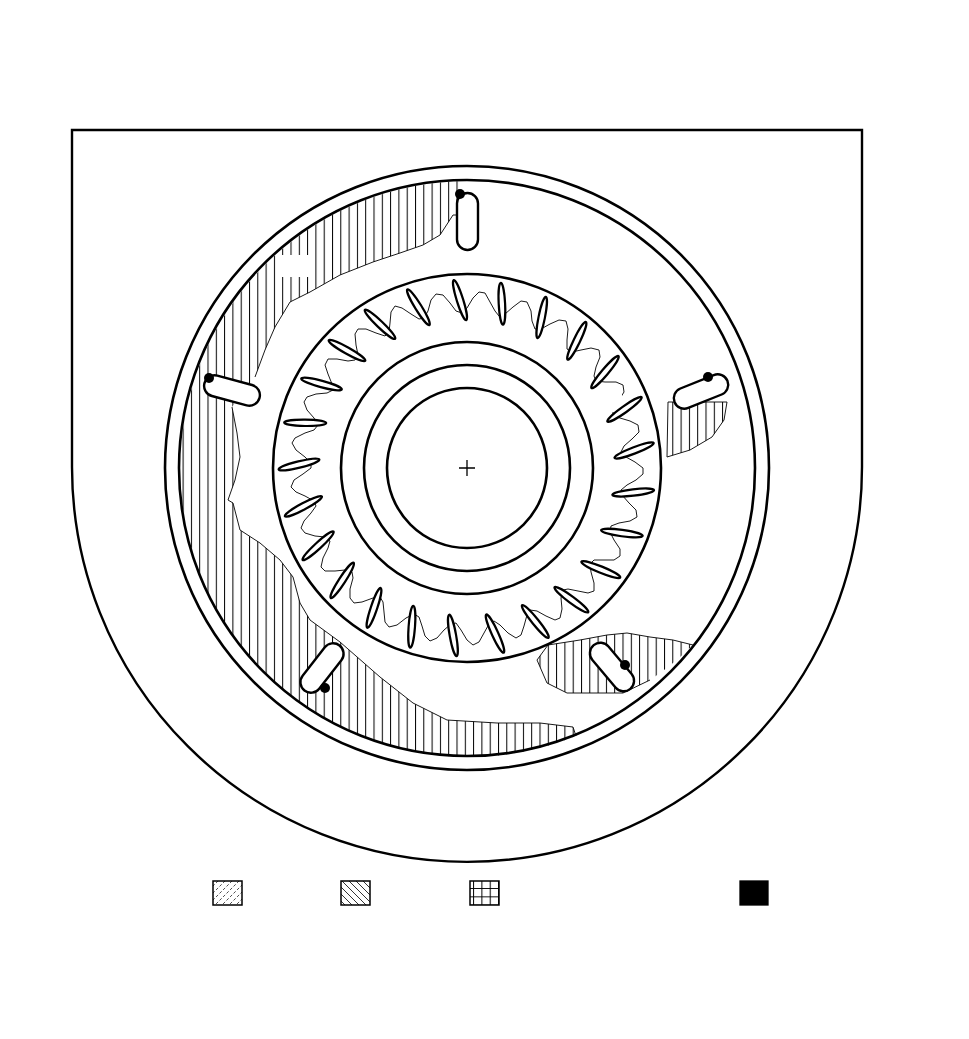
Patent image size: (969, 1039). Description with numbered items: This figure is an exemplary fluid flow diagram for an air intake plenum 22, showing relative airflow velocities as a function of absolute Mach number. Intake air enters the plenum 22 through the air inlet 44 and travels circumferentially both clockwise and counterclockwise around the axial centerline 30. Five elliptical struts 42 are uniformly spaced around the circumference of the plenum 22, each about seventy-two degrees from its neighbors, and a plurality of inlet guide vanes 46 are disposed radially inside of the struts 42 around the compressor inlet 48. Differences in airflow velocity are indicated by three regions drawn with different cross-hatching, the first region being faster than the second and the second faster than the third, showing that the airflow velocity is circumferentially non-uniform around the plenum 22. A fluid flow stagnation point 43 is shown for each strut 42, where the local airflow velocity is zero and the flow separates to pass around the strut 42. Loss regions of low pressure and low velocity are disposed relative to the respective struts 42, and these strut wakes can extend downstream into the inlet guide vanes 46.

The air intake plenum 22 is at (857, 92).
The axial centerline 30 is at (468, 470).
The strut 42 is at (479, 218).
The fluid flow stagnation point 43 is at (460, 192).
The air inlet 44 is at (693, 130).
The inlet guide vanes 46 is at (377, 305).
The compressor inlet 48 is at (450, 433).